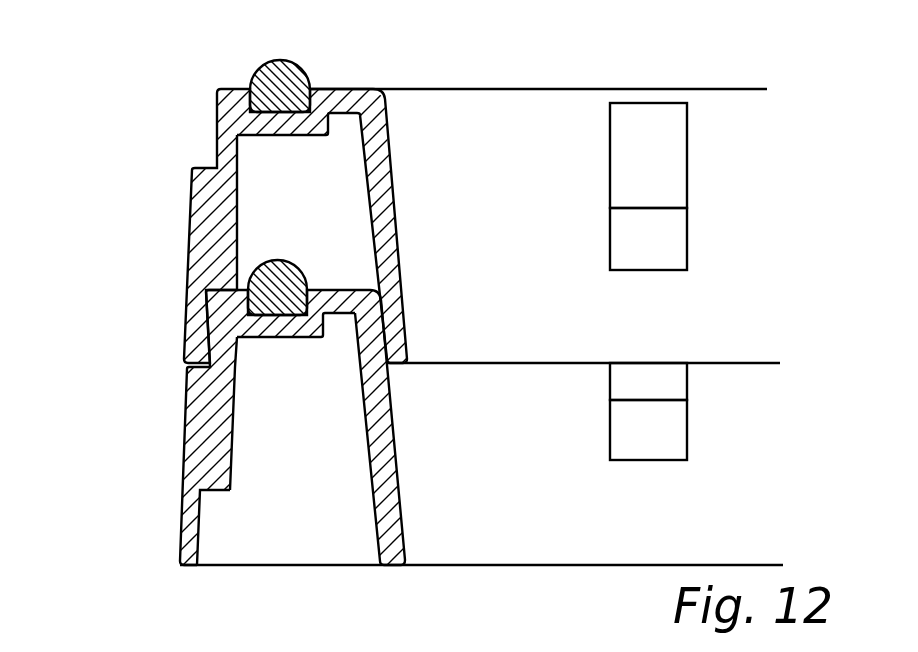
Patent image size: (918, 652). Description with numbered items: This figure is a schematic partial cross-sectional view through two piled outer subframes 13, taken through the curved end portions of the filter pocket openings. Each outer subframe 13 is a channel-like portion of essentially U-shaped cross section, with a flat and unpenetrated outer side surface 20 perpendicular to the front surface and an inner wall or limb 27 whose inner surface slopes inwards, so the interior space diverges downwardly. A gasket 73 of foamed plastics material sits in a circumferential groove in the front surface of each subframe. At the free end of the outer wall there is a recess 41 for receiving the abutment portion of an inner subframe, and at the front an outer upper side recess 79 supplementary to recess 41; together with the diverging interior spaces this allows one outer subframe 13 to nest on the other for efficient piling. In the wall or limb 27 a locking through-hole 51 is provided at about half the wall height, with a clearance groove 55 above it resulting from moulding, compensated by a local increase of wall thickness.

The outer subframe 13 is at (352, 67).
The outer side surface 20 is at (200, 222).
The inner wall or limb 27 is at (382, 203).
The recess 41 is at (198, 523).
The through-hole 51 is at (594, 250).
The clearance groove 55 is at (628, 160).
The gasket 73 is at (257, 64).
The outer upper side recess 79 is at (215, 130).